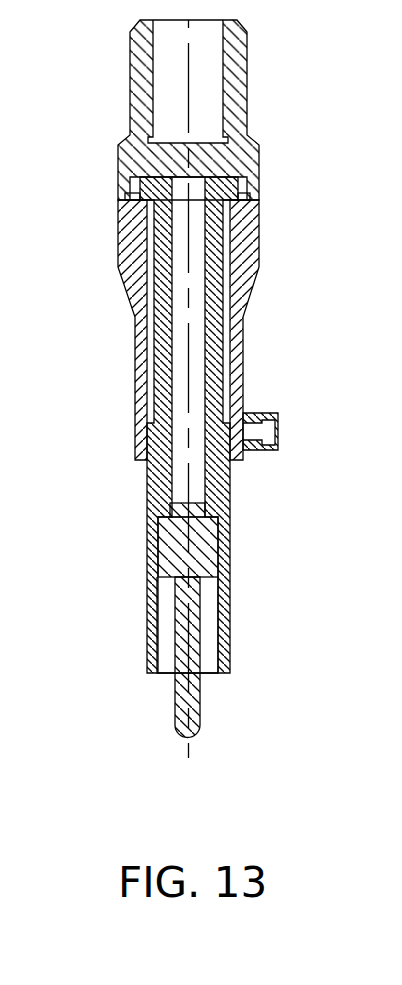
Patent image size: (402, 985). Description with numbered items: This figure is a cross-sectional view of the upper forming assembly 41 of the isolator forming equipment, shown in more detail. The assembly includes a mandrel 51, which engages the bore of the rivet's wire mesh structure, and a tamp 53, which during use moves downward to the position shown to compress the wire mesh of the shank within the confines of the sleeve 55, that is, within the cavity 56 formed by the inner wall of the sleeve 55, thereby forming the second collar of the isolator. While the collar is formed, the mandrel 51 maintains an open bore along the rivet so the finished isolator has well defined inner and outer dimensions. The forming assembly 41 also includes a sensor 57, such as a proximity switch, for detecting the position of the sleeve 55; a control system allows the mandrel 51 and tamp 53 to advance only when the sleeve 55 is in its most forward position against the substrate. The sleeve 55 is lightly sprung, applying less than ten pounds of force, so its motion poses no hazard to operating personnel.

The upper forming assembly 41 is at (130, 490).
The mandrel 51 is at (192, 698).
The tamp 53 is at (210, 542).
The sleeve 55 is at (220, 597).
The cavity 56 is at (163, 608).
The sensor 57 is at (262, 395).